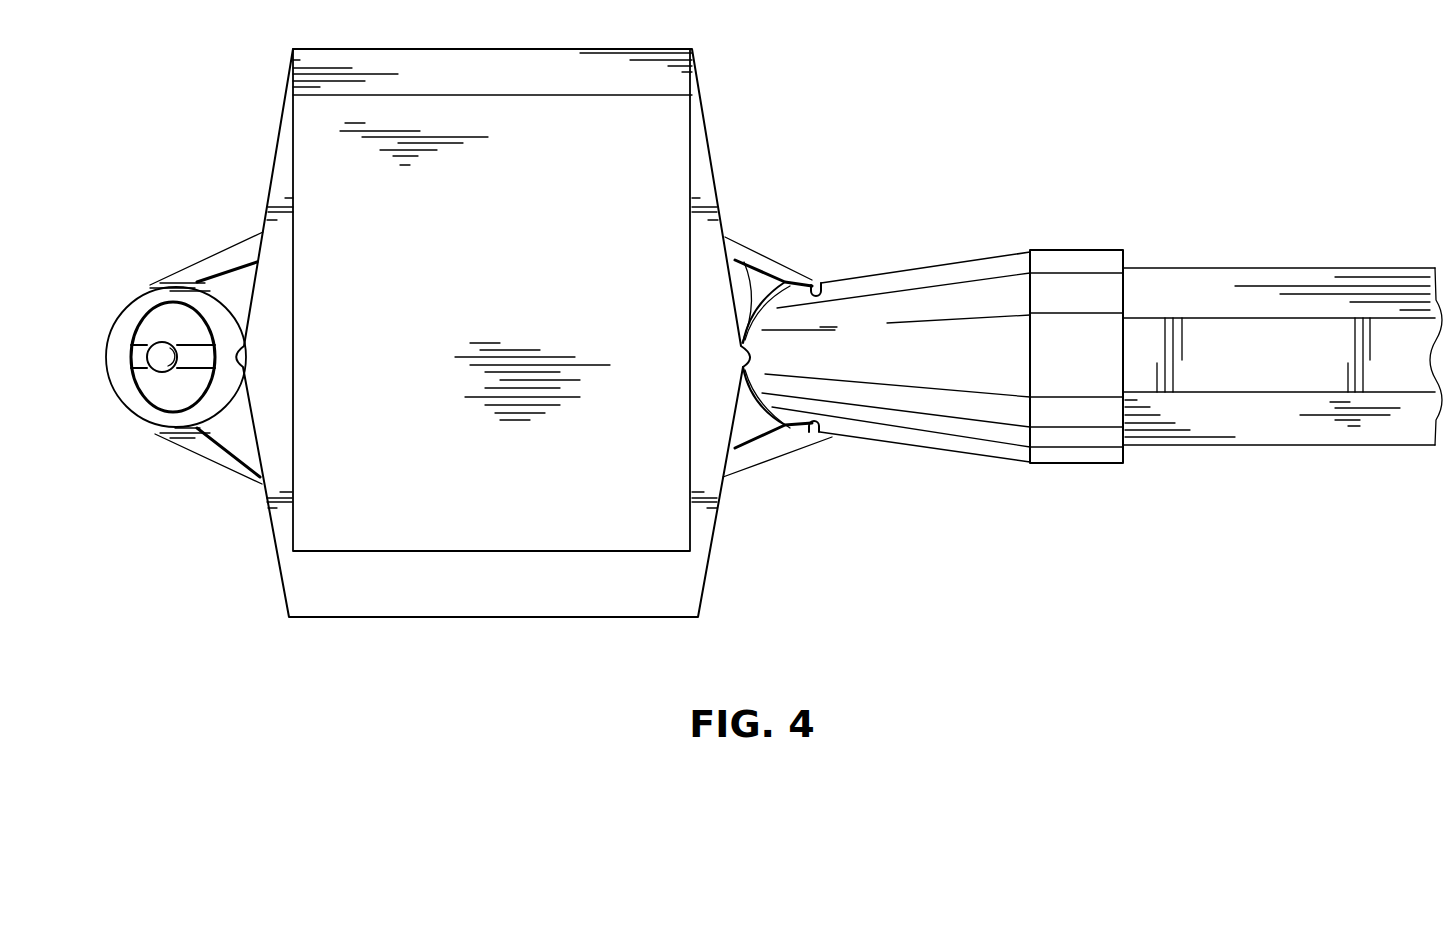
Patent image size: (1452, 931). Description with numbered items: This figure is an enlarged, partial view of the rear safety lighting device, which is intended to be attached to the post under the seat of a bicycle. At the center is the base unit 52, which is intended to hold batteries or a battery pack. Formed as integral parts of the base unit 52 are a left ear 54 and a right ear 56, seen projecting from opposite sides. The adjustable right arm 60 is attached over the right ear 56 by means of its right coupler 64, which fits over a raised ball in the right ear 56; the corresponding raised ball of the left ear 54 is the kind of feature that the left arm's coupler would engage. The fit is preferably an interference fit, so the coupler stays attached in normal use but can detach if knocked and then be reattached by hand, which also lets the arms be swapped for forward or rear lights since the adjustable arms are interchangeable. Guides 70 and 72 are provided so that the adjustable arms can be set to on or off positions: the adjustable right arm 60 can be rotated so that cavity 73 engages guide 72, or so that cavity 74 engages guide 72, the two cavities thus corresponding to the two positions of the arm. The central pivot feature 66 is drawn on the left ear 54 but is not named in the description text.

The base unit 52 is at (490, 618).
The left ear 54 is at (212, 450).
The right ear 56 is at (750, 453).
The adjustable right arm 60 is at (1273, 267).
The right coupler 64 is at (953, 280).
The pivot pin 66 is at (160, 350).
The guide 70 is at (230, 272).
The guide 72 is at (743, 268).
The cavity 73 is at (815, 280).
The cavity 74 is at (815, 432).